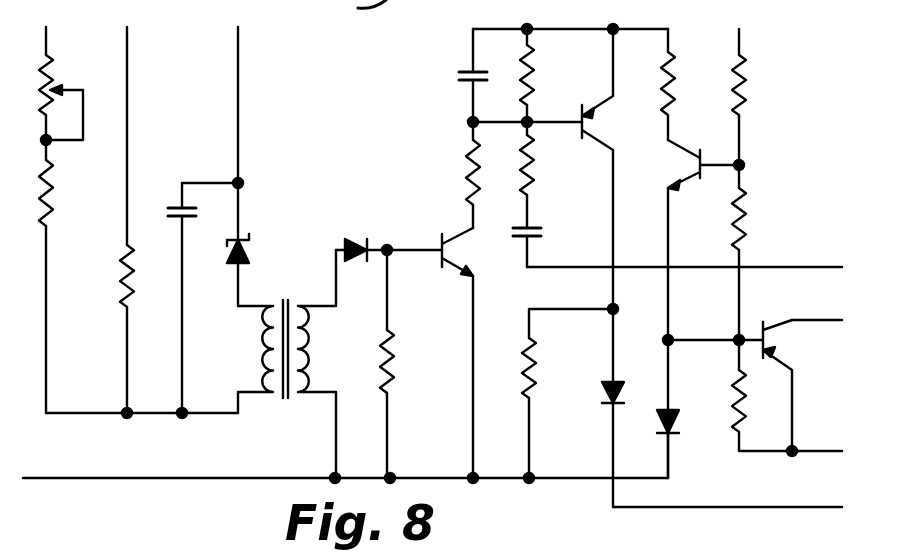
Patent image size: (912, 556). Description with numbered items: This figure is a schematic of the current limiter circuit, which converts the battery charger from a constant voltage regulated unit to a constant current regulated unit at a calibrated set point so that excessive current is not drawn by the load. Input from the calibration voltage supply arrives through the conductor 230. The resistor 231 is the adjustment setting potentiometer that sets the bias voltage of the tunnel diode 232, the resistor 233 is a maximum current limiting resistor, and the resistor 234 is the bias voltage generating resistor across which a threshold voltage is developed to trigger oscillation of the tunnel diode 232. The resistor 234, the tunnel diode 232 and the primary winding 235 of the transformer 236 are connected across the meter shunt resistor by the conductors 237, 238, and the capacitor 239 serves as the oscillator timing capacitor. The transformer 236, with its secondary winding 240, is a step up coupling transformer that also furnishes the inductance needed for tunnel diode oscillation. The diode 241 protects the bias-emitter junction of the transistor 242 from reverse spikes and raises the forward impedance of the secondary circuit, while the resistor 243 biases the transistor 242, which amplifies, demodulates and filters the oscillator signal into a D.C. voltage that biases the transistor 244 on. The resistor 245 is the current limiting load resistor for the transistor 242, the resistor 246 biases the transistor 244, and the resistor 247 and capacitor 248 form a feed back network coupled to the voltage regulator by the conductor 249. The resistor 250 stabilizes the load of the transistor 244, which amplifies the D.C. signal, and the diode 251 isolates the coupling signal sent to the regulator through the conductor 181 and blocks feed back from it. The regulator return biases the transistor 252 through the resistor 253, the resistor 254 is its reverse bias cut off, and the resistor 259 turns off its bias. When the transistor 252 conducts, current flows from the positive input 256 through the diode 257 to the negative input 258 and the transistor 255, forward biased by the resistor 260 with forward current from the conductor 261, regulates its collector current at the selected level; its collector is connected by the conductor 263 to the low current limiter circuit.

The conductor 181 is at (775, 507).
The conductor 230 is at (46, 38).
The resistor 231 is at (46, 68).
The tunnel diode 232 is at (250, 240).
The resistor 233 is at (48, 182).
The resistor 234 is at (120, 285).
The primary winding 235 is at (264, 346).
The transformer 236 is at (281, 364).
The conductor 237 is at (130, 66).
The conductor 238 is at (240, 48).
The capacitor 239 is at (180, 205).
The secondary winding 240 is at (306, 350).
The diode 241 is at (352, 238).
The transistor 242 is at (465, 278).
The resistor 243 is at (393, 360).
The transistor 244 is at (590, 126).
The resistor 245 is at (465, 168).
The resistor 246 is at (533, 76).
The resistor 247 is at (545, 176).
The capacitor 248 is at (532, 226).
The conductor 249 is at (775, 267).
The resistor 250 is at (534, 346).
The diode 251 is at (604, 398).
The transistor 252 is at (703, 180).
The resistor 253 is at (745, 70).
The resistor 254 is at (674, 62).
The transistor 255 is at (770, 343).
The positive input 256 is at (495, 29).
The diode 257 is at (676, 434).
The negative input 258 is at (70, 478).
The resistor 259 is at (746, 208).
The resistor 260 is at (728, 397).
The conductor 261 is at (813, 451).
The conductor 263 is at (797, 320).